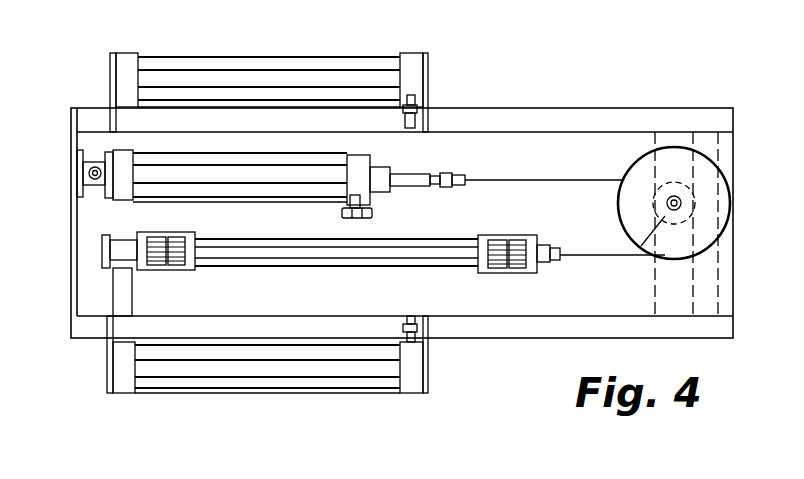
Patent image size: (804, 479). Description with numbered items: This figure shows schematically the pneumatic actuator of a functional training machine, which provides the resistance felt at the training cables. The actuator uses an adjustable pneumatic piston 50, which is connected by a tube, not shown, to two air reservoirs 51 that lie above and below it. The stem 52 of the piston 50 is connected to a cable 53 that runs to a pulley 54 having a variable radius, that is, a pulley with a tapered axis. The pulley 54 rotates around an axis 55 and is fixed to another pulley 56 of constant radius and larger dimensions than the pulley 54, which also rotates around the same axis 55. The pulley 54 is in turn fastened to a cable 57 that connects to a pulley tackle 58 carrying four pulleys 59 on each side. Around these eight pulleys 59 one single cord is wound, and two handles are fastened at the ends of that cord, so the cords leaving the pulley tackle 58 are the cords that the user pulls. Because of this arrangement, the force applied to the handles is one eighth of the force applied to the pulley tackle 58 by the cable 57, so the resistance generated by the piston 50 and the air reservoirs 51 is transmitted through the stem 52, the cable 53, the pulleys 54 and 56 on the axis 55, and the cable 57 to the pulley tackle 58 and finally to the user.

The pneumatic piston 50 is at (313, 178).
The air reservoirs 51 is at (252, 63).
The stem 52 is at (408, 183).
The cable 53 is at (543, 183).
The pulley with variable radius 54 is at (673, 198).
The axis 55 is at (668, 197).
The pulley with constant radius 56 is at (703, 172).
The cable 57 is at (602, 257).
The pulley tackle 58 is at (447, 271).
The pulleys 59 is at (156, 255).